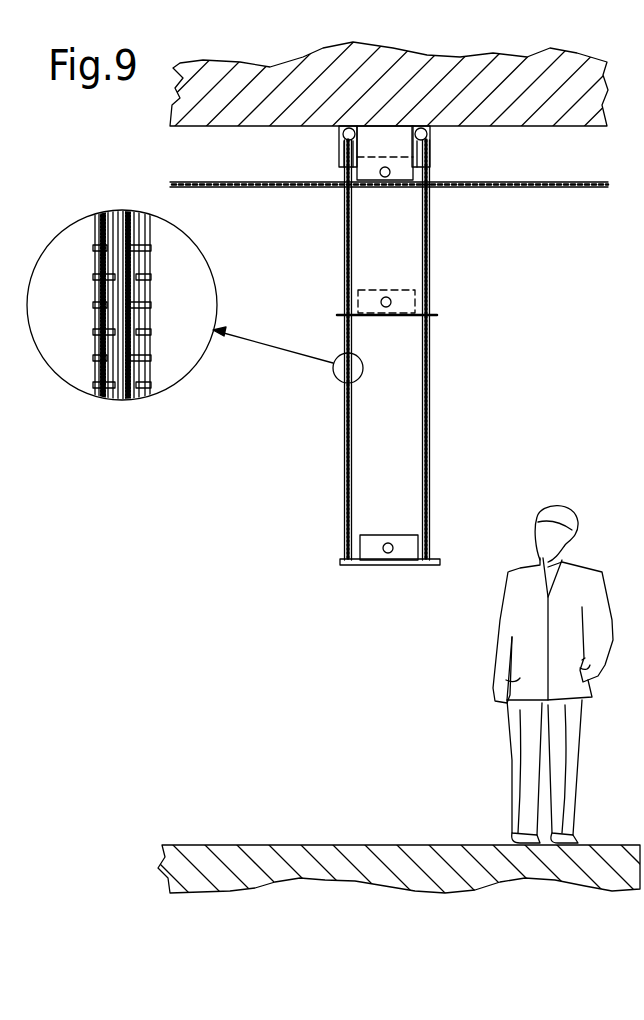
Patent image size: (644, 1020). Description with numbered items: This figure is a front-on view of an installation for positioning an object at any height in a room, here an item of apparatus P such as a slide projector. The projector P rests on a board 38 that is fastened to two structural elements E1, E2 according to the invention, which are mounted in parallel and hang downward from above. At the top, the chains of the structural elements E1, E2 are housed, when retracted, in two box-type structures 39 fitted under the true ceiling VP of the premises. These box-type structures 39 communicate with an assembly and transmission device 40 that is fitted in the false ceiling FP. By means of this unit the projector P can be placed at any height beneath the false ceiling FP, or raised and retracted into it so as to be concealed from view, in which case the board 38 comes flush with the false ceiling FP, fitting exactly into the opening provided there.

The true ceiling VP is at (275, 75).
The false ceiling FP is at (547, 188).
The box-type structures 39 is at (342, 130).
The assembly and transmission device 40 is at (340, 153).
The structural element E1 is at (433, 482).
The structural element E2 is at (347, 483).
The board 38 is at (358, 563).
The item of apparatus P is at (408, 552).